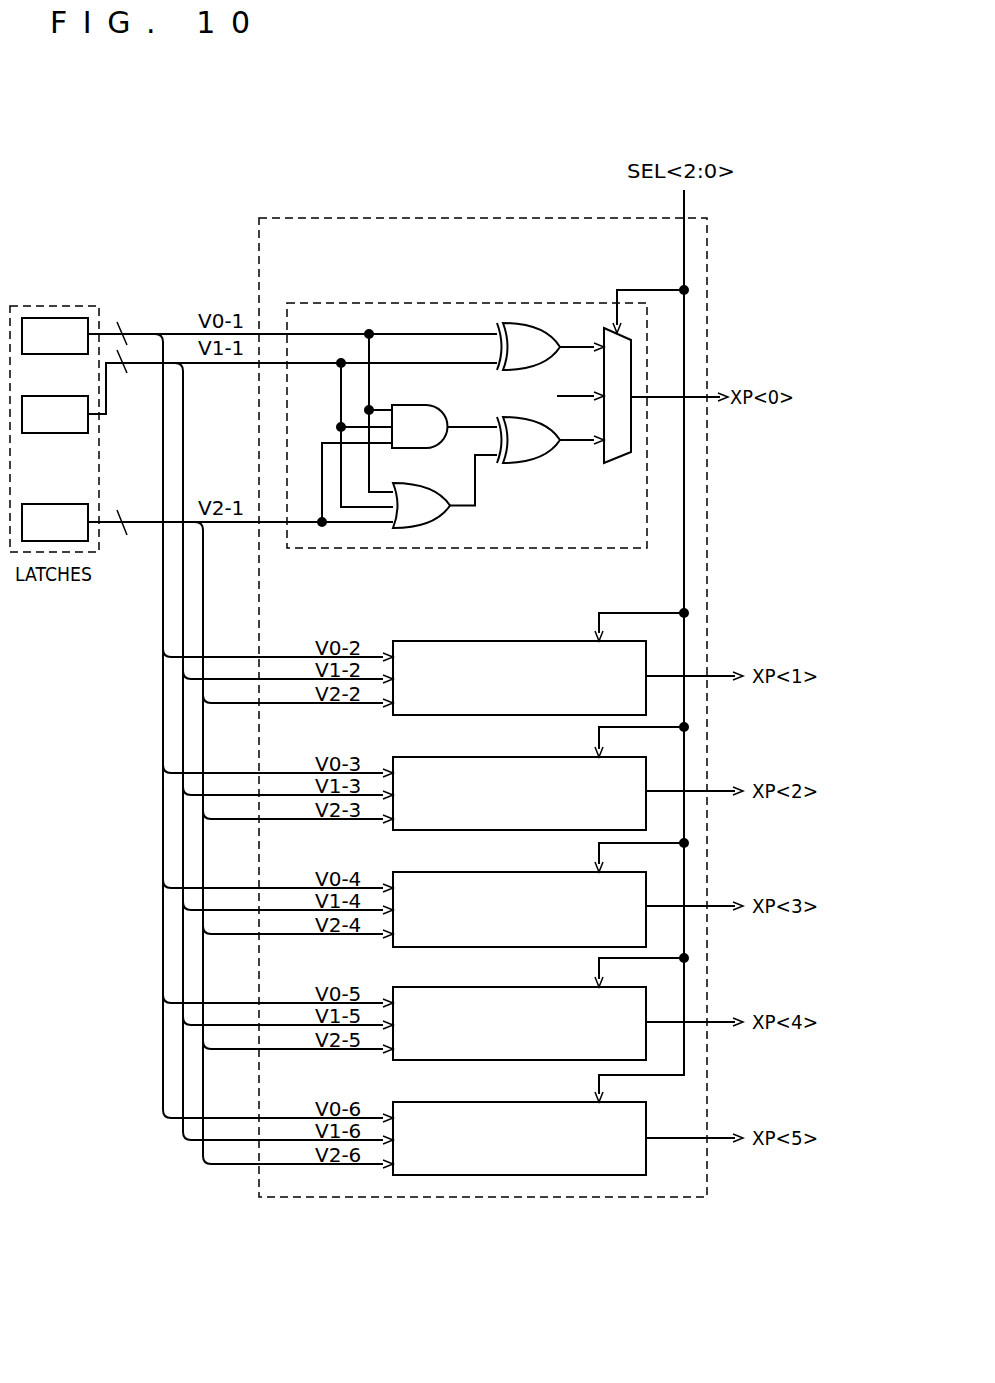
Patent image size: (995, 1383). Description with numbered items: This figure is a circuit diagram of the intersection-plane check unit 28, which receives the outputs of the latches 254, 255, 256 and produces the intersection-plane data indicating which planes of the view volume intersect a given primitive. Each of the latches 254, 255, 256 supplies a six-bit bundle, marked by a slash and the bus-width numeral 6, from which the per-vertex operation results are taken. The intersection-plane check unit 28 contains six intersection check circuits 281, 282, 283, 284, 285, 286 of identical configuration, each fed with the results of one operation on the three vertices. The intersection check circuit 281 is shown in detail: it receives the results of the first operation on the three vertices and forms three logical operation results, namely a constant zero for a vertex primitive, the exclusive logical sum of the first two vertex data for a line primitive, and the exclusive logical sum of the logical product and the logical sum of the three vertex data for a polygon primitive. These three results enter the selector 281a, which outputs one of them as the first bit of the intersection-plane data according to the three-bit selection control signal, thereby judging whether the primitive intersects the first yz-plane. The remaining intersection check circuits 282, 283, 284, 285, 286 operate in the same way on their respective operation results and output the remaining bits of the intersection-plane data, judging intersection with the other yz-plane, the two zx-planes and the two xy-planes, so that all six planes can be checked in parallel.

The latch 254 is at (70, 349).
The latch 255 is at (70, 428).
The latch 256 is at (70, 536).
The 6-bit bus width 6 is at (126, 419).
The intersection-plane check unit 28 is at (447, 218).
The intersection check circuit 281 is at (447, 303).
The selector 281a is at (620, 440).
The intersection check circuit 282 is at (487, 623).
The intersection check circuit 283 is at (487, 739).
The intersection check circuit 284 is at (487, 854).
The intersection check circuit 285 is at (487, 969).
The intersection check circuit 286 is at (487, 1084).